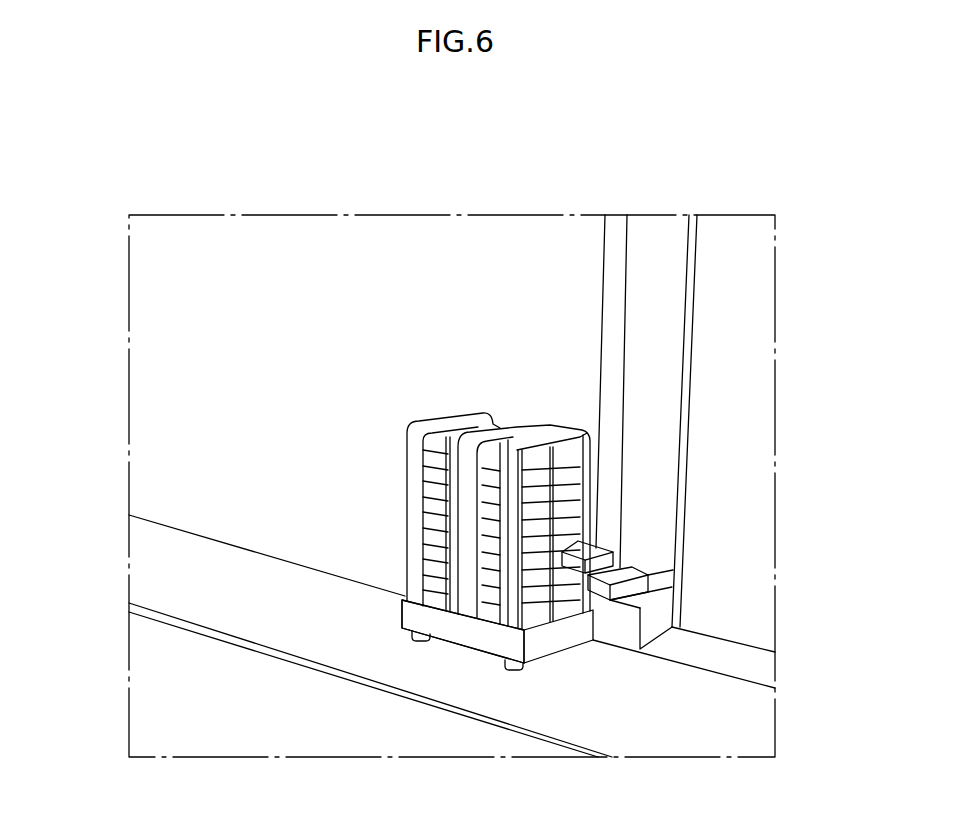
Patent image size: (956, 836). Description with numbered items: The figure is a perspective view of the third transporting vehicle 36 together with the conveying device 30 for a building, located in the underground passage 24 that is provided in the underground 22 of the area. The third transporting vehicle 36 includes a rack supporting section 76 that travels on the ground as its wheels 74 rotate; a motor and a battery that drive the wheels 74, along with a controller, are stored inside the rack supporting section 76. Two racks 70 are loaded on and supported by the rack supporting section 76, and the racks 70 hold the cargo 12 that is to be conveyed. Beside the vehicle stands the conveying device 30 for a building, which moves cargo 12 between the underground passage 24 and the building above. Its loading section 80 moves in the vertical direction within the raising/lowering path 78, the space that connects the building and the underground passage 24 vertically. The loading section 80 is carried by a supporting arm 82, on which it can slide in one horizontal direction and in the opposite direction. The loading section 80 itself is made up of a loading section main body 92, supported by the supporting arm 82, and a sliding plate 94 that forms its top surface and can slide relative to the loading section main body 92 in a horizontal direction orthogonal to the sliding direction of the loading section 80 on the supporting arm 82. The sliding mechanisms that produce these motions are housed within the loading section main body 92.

The cargo 12 is at (433, 450).
The underground 22 is at (177, 467).
The underground passage 24 is at (157, 566).
The conveying device for a building 30 is at (653, 243).
The third transporting vehicle 36 is at (478, 648).
The rack 70 is at (443, 420).
The wheel 74 is at (498, 670).
The rack supporting section 76 is at (442, 630).
The raising/lowering path 78 is at (667, 296).
The loading section 80 is at (638, 598).
The supporting arm 82 is at (685, 595).
The loading section main body 92 is at (622, 595).
The sliding plate 94 is at (618, 563).